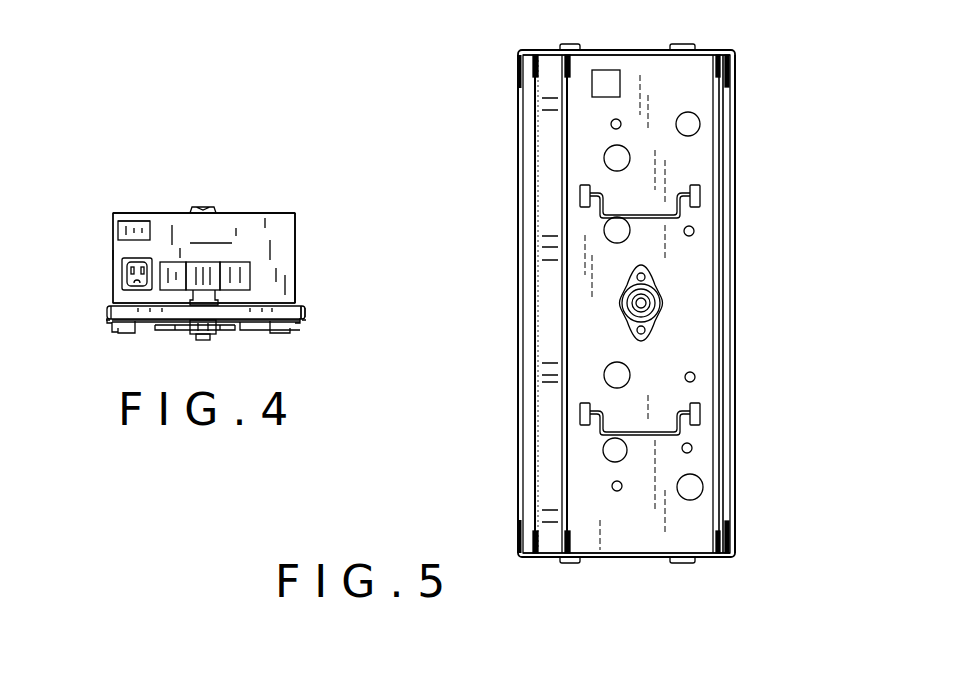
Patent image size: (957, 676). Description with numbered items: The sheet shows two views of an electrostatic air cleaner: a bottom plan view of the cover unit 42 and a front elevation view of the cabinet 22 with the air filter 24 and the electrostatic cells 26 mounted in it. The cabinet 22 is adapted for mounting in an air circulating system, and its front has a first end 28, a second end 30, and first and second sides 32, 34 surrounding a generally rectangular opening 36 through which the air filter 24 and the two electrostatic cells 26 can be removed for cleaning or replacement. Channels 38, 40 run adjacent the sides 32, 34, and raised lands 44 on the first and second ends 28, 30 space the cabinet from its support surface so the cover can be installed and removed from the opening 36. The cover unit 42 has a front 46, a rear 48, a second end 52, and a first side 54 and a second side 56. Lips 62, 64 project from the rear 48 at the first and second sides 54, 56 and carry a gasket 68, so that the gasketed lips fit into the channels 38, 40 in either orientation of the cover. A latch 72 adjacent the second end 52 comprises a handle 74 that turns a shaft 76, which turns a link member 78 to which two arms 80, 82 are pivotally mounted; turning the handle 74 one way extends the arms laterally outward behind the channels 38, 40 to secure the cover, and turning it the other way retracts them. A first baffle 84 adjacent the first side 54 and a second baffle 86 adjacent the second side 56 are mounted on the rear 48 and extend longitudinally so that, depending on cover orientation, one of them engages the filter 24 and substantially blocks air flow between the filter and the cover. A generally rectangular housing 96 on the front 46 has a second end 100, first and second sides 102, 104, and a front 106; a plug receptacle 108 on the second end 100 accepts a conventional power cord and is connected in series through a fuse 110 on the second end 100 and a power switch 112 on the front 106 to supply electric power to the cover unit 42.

In FIG. 5, the cabinet 22 is at (735, 60).
In FIG. 5, the air filter 24 is at (548, 128).
In FIG. 5, the electrostatic cells 26 is at (670, 153).
In FIG. 5, the first end 28 is at (615, 50).
In FIG. 5, the second end 30 is at (637, 560).
In FIG. 5, the first side 32 is at (515, 314).
In FIG. 5, the second side 34 is at (735, 320).
In FIG. 5, the opening 36 is at (725, 355).
In FIG. 5, the channel 38 is at (528, 424).
In FIG. 5, the channel 40 is at (725, 428).
In FIG. 4, the cover unit 42 is at (295, 300).
In FIG. 5, the raised lands 44 is at (568, 50).
In FIG. 4, the front 46 is at (170, 182).
In FIG. 4, the rear 48 is at (96, 348).
In FIG. 4, the second end 52 is at (277, 225).
In FIG. 4, the first side 54 is at (96, 248).
In FIG. 4, the second side 56 is at (295, 279).
In FIG. 4, the lip 62 is at (107, 308).
In FIG. 4, the lip 64 is at (303, 307).
In FIG. 4, the gasket 68 is at (108, 320).
In FIG. 4, the latch 72 is at (252, 226).
In FIG. 4, the handle 74 is at (240, 265).
In FIG. 4, the shaft 76 is at (210, 330).
In FIG. 4, the link member 78 is at (192, 326).
In FIG. 4, the arm 80 is at (156, 322).
In FIG. 4, the arm 82 is at (255, 325).
In FIG. 4, the first baffle 84 is at (134, 325).
In FIG. 4, the second baffle 86 is at (290, 334).
In FIG. 4, the housing 96 is at (137, 213).
In FIG. 4, the second end 100 is at (210, 232).
In FIG. 4, the first side 102 is at (113, 283).
In FIG. 4, the second side 104 is at (306, 255).
In FIG. 4, the front 106 is at (237, 213).
In FIG. 4, the plug receptacle 108 is at (113, 250).
In FIG. 4, the fuse 110 is at (128, 231).
In FIG. 4, the power switch 112 is at (203, 207).